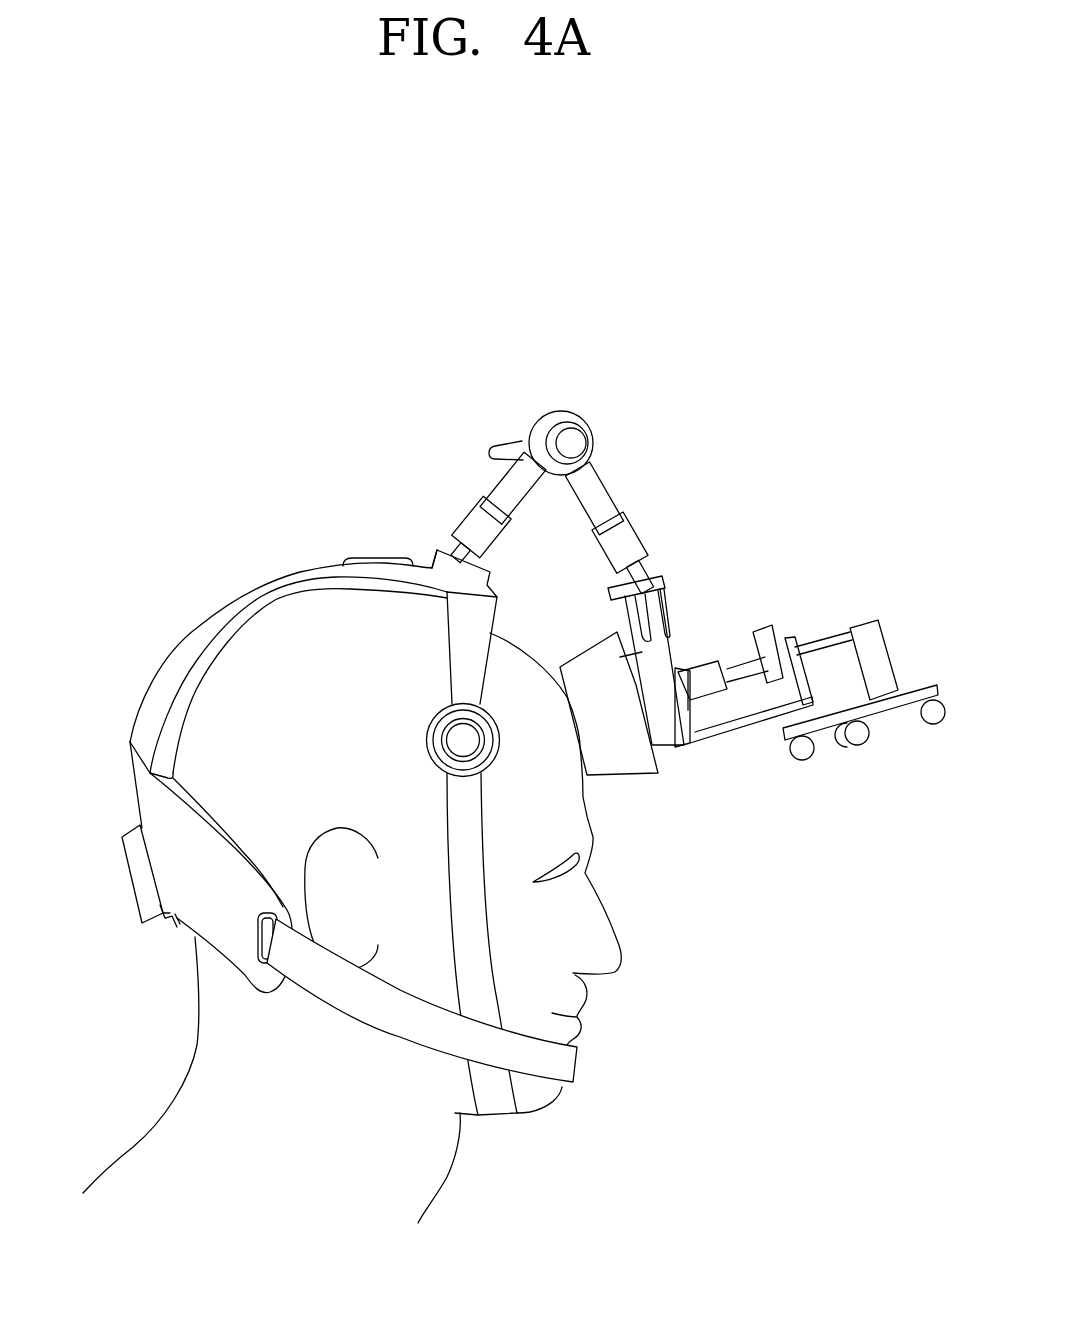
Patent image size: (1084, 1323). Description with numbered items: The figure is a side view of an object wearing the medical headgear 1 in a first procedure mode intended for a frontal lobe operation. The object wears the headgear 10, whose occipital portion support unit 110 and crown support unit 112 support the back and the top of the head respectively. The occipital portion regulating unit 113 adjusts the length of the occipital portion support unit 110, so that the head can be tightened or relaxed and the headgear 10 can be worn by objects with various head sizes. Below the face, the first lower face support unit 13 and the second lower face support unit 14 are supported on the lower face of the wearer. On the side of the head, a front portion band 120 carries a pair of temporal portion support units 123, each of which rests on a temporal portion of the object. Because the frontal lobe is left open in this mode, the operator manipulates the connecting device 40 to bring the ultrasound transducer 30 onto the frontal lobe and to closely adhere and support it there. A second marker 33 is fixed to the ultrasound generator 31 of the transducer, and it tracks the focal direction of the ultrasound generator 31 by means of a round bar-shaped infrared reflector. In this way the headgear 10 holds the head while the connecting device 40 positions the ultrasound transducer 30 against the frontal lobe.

The medical headgear 1 is at (748, 450).
The headgear 10 is at (182, 607).
The occipital portion support unit 110 is at (162, 670).
The crown support unit 112 is at (397, 596).
The occipital portion regulating unit 113 is at (137, 902).
The front portion band 120 is at (500, 690).
The temporal portion support unit 123 is at (428, 745).
The first lower face support unit 13 is at (565, 1070).
The second lower face support unit 14 is at (494, 1105).
The ultrasound transducer 30 is at (705, 600).
The ultrasound generator 31 is at (680, 728).
The second marker 33 is at (887, 643).
The connecting device 40 is at (515, 410).